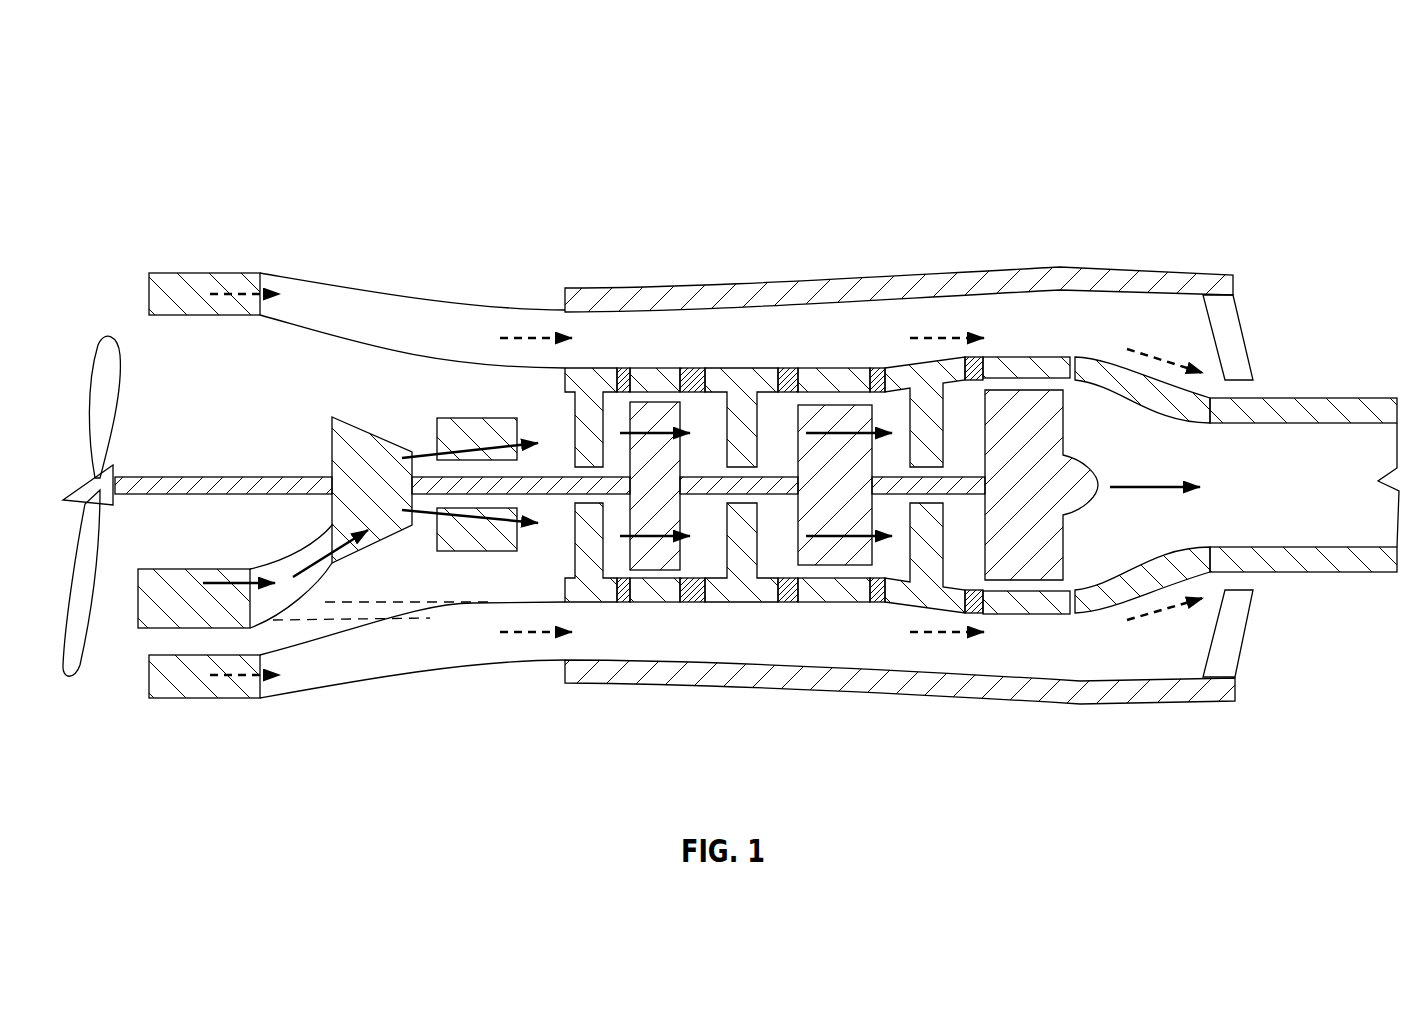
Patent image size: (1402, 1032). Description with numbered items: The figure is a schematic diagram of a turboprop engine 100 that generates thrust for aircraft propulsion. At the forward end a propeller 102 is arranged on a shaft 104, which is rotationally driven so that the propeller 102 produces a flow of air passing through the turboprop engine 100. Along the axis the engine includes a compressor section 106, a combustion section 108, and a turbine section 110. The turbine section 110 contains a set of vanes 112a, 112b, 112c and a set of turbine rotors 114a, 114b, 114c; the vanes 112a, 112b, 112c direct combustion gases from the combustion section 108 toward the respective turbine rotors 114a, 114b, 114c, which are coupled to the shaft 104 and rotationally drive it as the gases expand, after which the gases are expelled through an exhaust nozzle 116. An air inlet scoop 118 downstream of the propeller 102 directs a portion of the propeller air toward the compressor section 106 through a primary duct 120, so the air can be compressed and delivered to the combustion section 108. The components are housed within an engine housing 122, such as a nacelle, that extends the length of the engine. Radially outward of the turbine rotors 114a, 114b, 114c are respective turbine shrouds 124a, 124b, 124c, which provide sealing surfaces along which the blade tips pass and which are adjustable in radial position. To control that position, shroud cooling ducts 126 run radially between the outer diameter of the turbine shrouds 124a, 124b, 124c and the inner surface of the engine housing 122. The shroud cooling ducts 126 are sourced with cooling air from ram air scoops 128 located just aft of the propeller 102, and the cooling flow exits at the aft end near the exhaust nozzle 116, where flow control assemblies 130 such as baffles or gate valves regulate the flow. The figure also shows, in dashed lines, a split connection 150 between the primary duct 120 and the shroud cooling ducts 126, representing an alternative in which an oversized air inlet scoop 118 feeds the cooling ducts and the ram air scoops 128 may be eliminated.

The turboprop engine 100 is at (1316, 117).
The propeller 102 is at (92, 306).
The shaft 104 is at (213, 478).
The compressor section 106 is at (366, 410).
The combustion section 108 is at (462, 401).
The turbine section 110 is at (1070, 147).
The vane 112a is at (597, 386).
The vane 112b is at (735, 387).
The vane 112c is at (928, 392).
The turbine rotor 114a is at (660, 411).
The turbine rotor 114b is at (832, 417).
The turbine rotor 114c is at (1028, 392).
The exhaust nozzle 116 is at (1356, 590).
The air inlet scoop 118 is at (147, 620).
The primary duct 120 is at (266, 594).
The engine housing 122 is at (1214, 272).
The turbine shroud 124a is at (655, 600).
The turbine shroud 124b is at (845, 597).
The turbine shroud 124c is at (1045, 606).
The shroud cooling duct 126 is at (310, 299).
The ram air scoop 128 is at (230, 283).
The flow control assembly 130 is at (1248, 344).
The split connection 150 is at (347, 610).